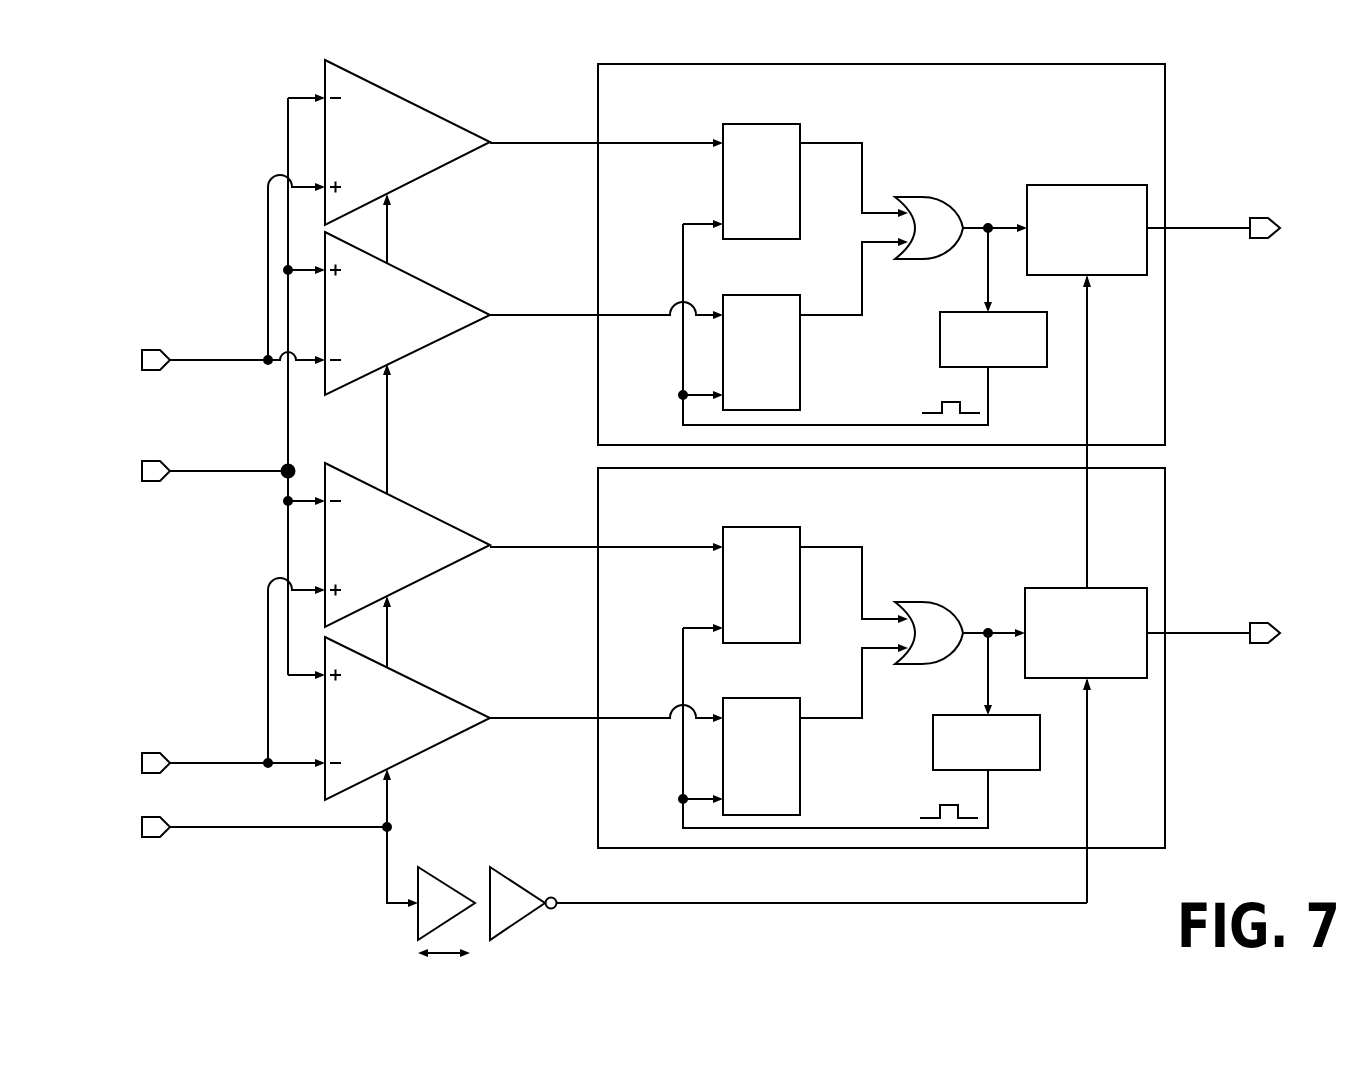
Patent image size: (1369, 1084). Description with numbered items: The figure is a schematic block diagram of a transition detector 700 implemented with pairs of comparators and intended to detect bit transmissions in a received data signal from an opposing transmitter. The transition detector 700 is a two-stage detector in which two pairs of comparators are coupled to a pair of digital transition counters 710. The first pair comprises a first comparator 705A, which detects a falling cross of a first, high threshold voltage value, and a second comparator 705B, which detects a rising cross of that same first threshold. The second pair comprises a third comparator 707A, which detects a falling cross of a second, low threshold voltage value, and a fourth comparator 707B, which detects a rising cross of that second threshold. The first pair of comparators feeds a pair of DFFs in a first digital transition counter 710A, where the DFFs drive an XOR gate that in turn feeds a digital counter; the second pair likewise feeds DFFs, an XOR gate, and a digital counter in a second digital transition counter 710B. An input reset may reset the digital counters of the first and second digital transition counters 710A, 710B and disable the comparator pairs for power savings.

The transition detector 700 is at (110, 61).
The first comparator 705A is at (323, 145).
The second comparator 705B is at (323, 316).
The third comparator 707A is at (323, 552).
The fourth comparator 707B is at (323, 732).
The digital transition counters 710 is at (1200, 528).
The first digital transition counter 710A is at (1020, 96).
The second digital transition counter 710B is at (1018, 501).